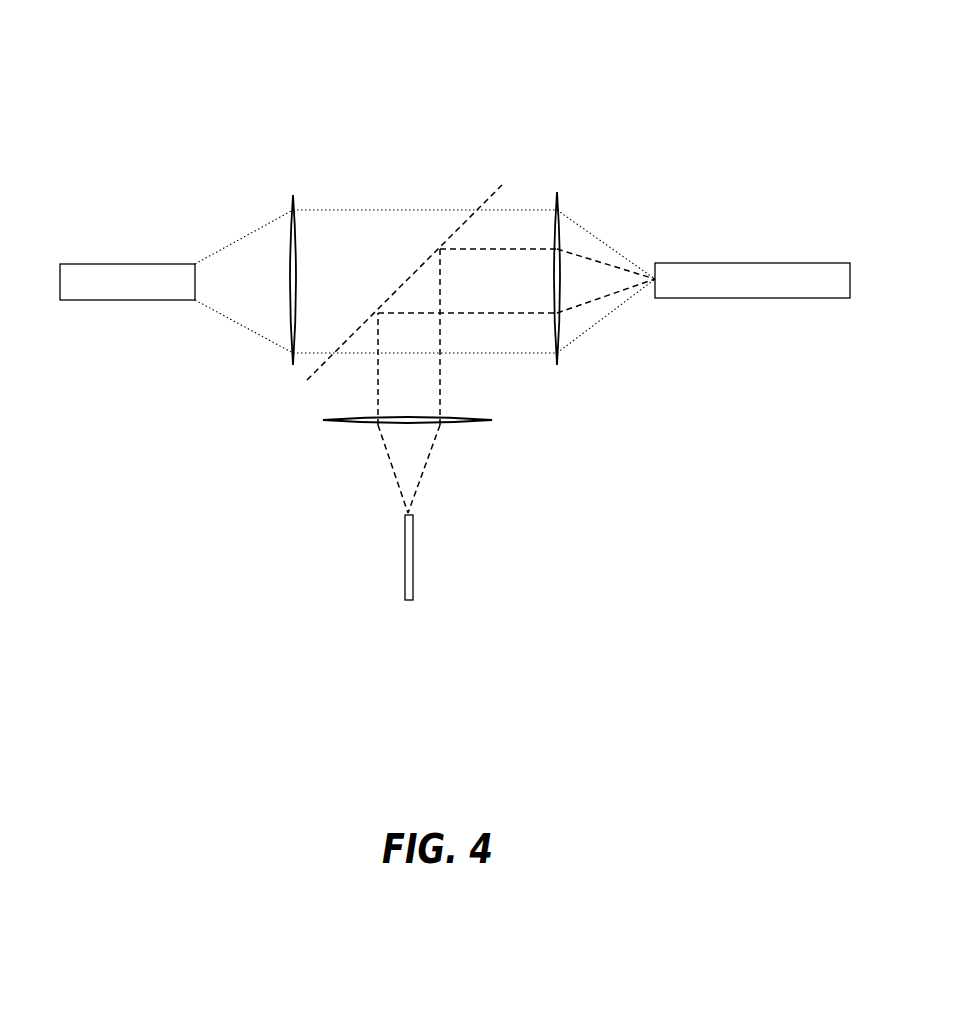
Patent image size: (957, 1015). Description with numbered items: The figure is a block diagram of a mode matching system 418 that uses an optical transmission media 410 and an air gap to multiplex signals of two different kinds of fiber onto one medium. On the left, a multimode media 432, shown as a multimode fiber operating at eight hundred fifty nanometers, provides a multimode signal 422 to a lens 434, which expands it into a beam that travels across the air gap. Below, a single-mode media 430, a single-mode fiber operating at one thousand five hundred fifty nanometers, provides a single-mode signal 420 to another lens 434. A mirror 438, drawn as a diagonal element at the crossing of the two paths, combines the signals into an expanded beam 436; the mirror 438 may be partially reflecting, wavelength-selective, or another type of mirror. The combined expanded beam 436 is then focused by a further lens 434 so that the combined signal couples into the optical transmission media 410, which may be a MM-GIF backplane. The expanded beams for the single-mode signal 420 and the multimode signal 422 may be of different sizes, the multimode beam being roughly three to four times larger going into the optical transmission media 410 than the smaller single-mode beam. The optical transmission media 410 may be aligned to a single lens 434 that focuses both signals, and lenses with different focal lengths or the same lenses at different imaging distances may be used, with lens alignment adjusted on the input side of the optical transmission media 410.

The mode matching system 418 is at (334, 40).
The optical transmission media 410 is at (767, 298).
The single-mode signal 420 is at (387, 453).
The multimode signal 422 is at (237, 322).
The single-mode media 430 is at (406, 548).
The multimode media 432 is at (120, 300).
The lens 434 is at (292, 197).
The expanded beam 436 is at (523, 166).
The mirror 438 is at (494, 195).